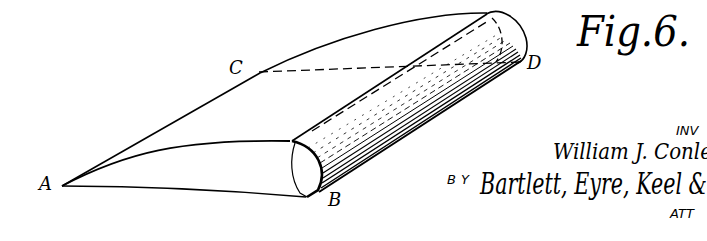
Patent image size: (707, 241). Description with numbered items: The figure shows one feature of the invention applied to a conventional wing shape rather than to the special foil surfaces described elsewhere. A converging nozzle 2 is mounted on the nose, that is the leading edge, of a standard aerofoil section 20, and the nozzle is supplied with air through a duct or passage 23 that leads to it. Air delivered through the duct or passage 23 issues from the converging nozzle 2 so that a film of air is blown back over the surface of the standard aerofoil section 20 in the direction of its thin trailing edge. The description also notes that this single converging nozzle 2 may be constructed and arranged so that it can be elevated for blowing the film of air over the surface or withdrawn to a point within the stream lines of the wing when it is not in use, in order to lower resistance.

The converging nozzle 2 is at (291, 140).
The standard aerofoil section 20 is at (222, 182).
The duct or passage 23 is at (306, 189).